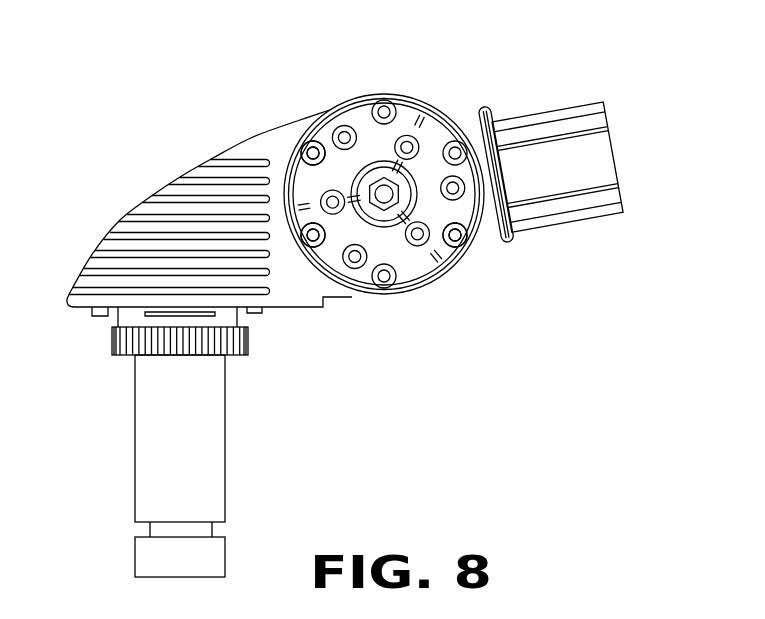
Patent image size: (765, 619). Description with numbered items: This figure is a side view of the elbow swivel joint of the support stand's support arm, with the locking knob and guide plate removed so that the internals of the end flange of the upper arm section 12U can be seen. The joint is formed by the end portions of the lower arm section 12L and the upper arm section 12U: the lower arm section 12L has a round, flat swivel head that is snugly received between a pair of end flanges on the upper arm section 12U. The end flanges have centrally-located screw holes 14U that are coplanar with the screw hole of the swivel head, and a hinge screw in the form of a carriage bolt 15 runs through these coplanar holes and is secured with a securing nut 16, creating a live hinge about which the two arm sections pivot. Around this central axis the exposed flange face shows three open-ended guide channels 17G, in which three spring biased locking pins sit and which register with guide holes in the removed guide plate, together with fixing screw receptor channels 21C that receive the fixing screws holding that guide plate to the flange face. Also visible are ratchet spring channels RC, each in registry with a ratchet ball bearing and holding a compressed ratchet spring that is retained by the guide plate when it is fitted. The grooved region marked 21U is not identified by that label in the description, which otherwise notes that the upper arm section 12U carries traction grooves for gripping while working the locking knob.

The upper housing with cooling fins 21U is at (163, 218).
The upper arm section 12U is at (213, 474).
The lower arm section 12L is at (605, 177).
The screw holes 14U is at (405, 185).
The securing nut 16 is at (377, 172).
The carriage bolt 15 is at (385, 198).
The open-ended guide channels 17G is at (334, 134).
The fixing screw receptor channels 21C is at (404, 137).
The ratchet spring channel RC is at (301, 156).